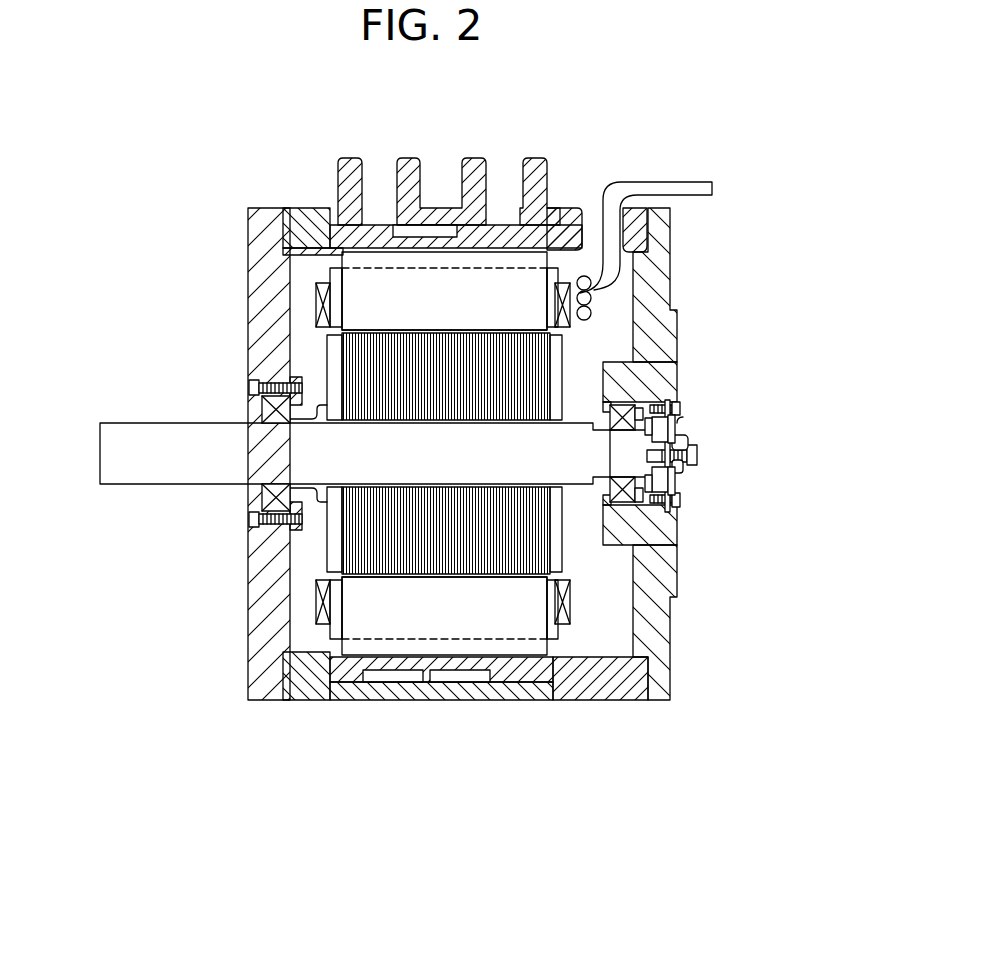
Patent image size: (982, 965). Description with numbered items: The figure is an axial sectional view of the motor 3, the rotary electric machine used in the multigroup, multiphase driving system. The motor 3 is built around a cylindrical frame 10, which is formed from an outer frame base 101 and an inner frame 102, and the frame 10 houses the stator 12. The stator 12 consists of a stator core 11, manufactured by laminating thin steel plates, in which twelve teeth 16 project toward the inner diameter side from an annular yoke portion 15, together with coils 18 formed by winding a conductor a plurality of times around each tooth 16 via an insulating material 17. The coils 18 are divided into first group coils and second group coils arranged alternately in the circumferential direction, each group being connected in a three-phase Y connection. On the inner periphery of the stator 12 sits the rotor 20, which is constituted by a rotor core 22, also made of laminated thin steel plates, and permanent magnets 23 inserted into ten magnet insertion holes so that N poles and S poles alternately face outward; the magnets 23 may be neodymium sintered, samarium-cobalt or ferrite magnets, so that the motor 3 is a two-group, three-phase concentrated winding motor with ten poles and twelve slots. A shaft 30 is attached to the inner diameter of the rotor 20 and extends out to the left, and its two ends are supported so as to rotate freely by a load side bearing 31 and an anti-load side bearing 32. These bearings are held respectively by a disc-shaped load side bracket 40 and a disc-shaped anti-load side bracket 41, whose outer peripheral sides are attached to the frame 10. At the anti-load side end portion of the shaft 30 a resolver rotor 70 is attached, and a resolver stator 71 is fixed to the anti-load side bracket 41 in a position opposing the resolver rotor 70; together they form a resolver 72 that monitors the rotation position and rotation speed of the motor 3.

The motor 3 is at (97, 112).
The cylindrical frame 10 is at (594, 112).
The outer frame base 101 is at (440, 217).
The inner frame 102 is at (563, 207).
The stator core 11 is at (347, 750).
The stator 12 is at (267, 778).
The annular yoke portion 15 is at (360, 650).
The teeth 16 is at (408, 627).
The insulating material 17 is at (337, 652).
The coils 18 is at (318, 625).
The rotor 20 is at (510, 750).
The rotor core 22 is at (507, 562).
The permanent magnets 23 is at (556, 562).
The shaft 30 is at (130, 473).
The load side bearing 31 is at (253, 497).
The anti-load side bearing 32 is at (625, 505).
The load side bracket 40 is at (262, 646).
The anti-load side bracket 41 is at (665, 681).
The resolver rotor 70 is at (660, 468).
The resolver stator 71 is at (662, 483).
The resolver 72 is at (753, 465).